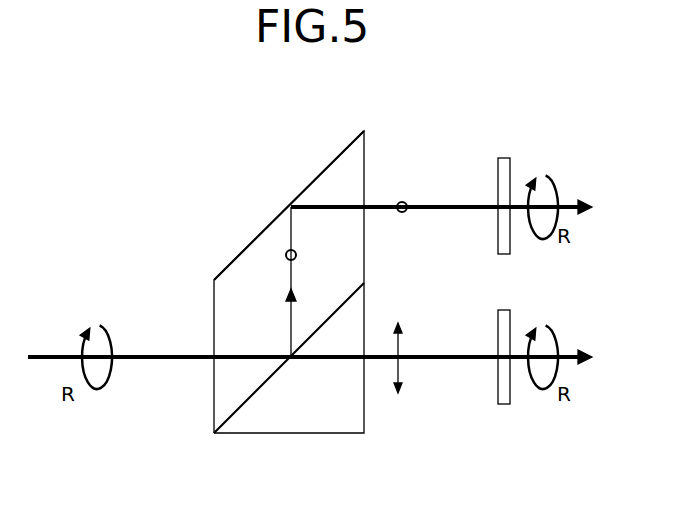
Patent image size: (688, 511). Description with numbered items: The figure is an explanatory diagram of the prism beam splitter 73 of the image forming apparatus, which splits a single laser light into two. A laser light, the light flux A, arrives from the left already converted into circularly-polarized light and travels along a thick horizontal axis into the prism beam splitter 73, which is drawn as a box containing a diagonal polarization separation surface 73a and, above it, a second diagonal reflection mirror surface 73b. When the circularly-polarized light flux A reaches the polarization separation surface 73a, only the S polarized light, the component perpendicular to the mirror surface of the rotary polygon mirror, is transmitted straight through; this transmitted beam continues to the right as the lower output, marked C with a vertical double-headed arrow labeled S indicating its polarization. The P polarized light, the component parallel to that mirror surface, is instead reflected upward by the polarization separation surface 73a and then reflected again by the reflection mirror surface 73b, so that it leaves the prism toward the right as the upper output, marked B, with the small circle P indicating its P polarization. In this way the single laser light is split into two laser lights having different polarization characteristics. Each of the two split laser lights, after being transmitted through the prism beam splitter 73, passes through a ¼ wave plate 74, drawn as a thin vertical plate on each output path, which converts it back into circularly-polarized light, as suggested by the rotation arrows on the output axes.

The prism beam splitter 73 is at (243, 434).
The polarization separation surface 73a is at (263, 388).
The reflection mirror surface 73b is at (352, 152).
The ¼ wave plate 74 is at (504, 253).
The light flux A is at (53, 353).
The P-polarized light beam B is at (447, 209).
The S-polarized light beam C is at (435, 355).
The P polarized light P is at (401, 195).
The S polarized light S is at (396, 372).